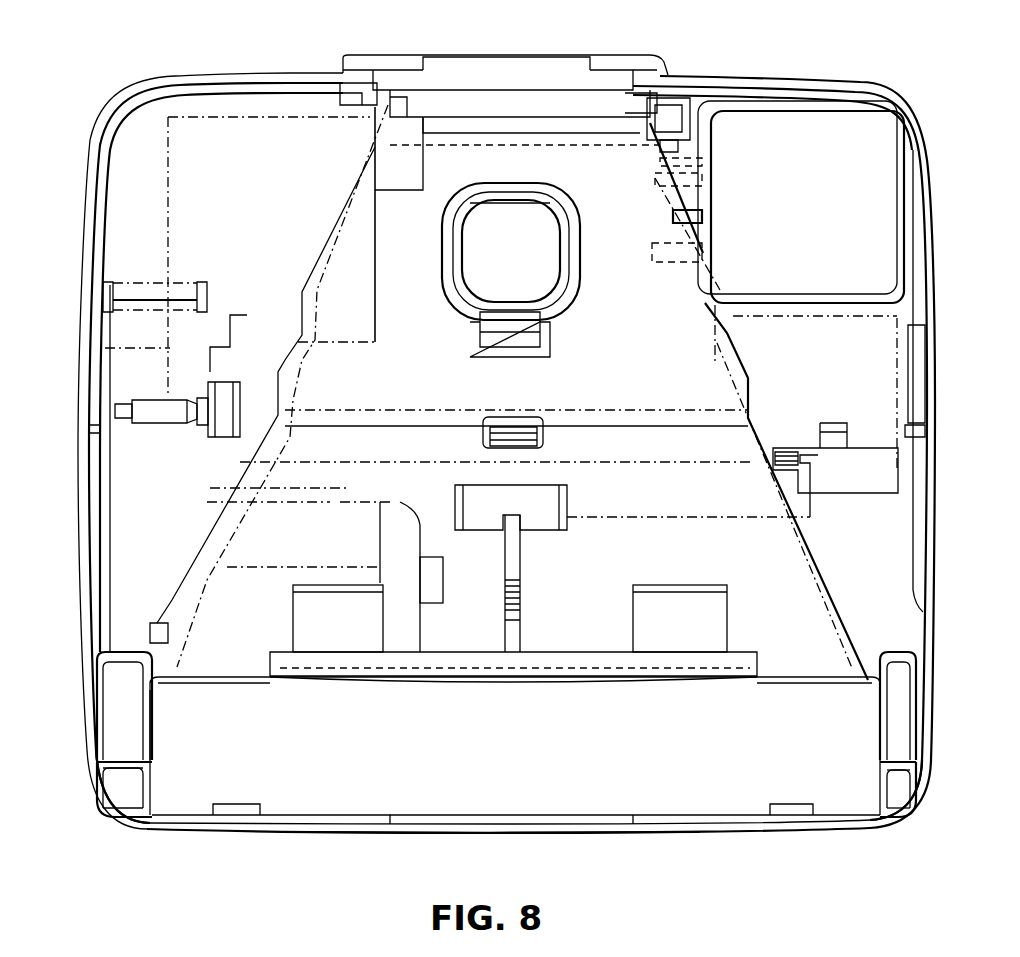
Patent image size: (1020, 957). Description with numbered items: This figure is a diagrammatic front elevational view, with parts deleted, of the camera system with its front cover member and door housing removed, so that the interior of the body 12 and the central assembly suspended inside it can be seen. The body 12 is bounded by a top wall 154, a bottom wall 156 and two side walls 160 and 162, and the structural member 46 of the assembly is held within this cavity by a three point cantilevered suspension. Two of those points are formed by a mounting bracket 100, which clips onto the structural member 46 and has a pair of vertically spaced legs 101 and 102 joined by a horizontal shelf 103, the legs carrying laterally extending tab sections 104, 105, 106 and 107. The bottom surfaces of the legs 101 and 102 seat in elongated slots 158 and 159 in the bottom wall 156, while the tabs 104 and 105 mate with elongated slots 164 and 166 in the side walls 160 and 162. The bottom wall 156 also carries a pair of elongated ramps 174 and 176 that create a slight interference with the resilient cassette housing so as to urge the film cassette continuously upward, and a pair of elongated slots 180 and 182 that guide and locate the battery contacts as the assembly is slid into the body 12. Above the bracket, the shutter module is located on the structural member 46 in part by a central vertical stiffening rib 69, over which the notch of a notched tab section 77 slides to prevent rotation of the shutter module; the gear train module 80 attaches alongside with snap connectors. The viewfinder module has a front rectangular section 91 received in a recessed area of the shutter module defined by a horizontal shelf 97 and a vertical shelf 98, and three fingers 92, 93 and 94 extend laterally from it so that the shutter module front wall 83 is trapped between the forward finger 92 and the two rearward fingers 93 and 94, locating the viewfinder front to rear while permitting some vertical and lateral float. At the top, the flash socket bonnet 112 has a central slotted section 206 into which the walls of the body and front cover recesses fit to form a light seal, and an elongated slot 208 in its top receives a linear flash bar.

The body 12 is at (185, 62).
The structural member 46 is at (838, 572).
The central vertical stiffening rib 69 is at (517, 606).
The notched tab section 77 is at (565, 520).
The gear train module 80 is at (182, 272).
The front wall 83 is at (840, 480).
The front rectangular section 91 is at (842, 108).
The forward finger 92 is at (672, 218).
The rearward finger 93 is at (655, 180).
The rearward finger 94 is at (650, 252).
The horizontal shelf 97 is at (797, 307).
The vertical shelf 98 is at (668, 157).
The mounting bracket 100 is at (242, 690).
The leg 101 is at (151, 718).
The leg 102 is at (877, 700).
The horizontal shelf 103 is at (791, 678).
The laterally extending tab section 104 is at (128, 760).
The laterally extending tab section 105 is at (892, 762).
The laterally extending tab section 106 is at (118, 656).
The laterally extending tab section 107 is at (897, 650).
The flash socket bonnet 112 is at (632, 68).
The top wall 154 is at (772, 77).
The bottom wall 156 is at (543, 834).
The elongated slot 158 is at (158, 835).
The elongated slot 159 is at (870, 826).
The side wall 160 is at (82, 358).
The side wall 162 is at (918, 510).
The elongated slot 164 is at (100, 800).
The elongated slot 166 is at (892, 784).
The elongated ramp 174 is at (240, 802).
The elongated ramp 176 is at (790, 804).
The elongated slot 180 is at (350, 814).
The elongated slot 182 is at (671, 814).
The central slotted section 206 is at (342, 78).
The elongated slot 208 is at (512, 57).